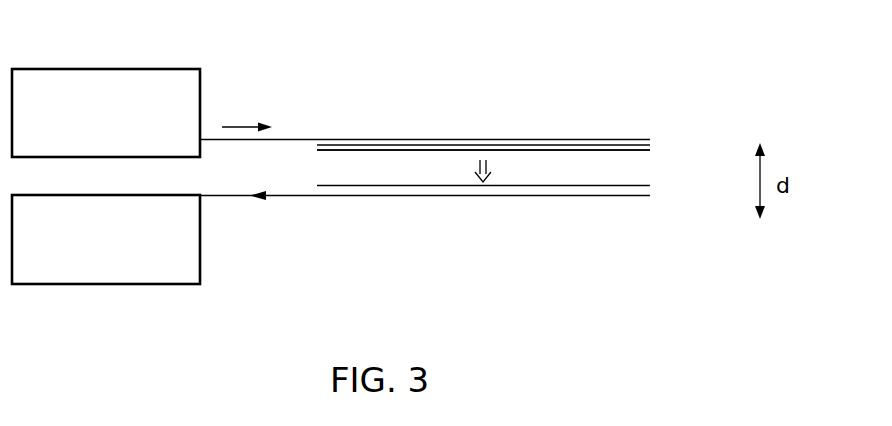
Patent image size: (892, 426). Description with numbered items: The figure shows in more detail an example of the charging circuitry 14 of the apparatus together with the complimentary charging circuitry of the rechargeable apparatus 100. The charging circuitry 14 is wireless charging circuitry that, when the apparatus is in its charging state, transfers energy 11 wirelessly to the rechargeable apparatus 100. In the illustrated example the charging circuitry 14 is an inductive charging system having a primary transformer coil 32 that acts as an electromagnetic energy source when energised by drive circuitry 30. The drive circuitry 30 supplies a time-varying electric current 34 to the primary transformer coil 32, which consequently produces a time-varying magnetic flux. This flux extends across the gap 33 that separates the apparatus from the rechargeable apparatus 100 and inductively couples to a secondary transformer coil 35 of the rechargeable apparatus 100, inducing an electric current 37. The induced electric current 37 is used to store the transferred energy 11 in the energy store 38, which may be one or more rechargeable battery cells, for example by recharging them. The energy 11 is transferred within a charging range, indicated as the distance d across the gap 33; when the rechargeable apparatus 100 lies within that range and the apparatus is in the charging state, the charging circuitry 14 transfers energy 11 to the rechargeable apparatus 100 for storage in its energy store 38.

The drive circuitry 30 is at (102, 68).
The energy store 38 is at (105, 285).
The time-varying electric current 34 is at (246, 122).
The electric current 37 is at (272, 199).
The primary transformer coil 32 is at (618, 138).
The gap 33 is at (650, 168).
The secondary transformer coil 35 is at (650, 190).
The energy 11 is at (490, 163).
The charging circuitry 14 is at (500, 62).
The rechargeable apparatus 100 is at (502, 248).